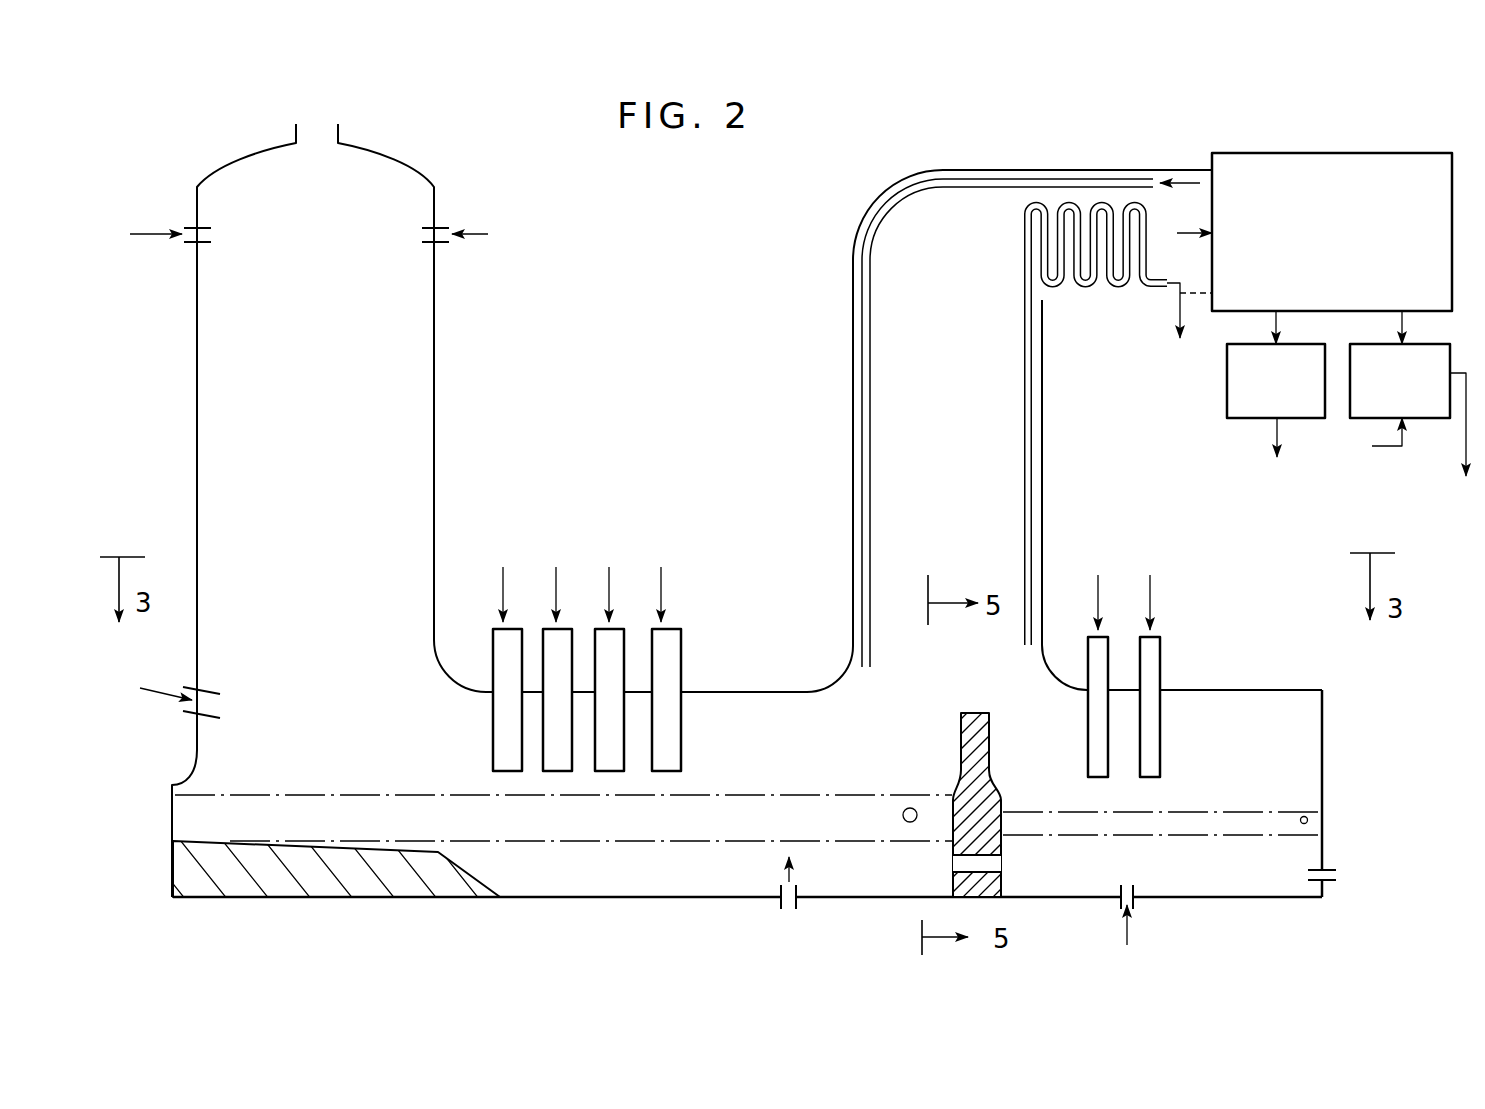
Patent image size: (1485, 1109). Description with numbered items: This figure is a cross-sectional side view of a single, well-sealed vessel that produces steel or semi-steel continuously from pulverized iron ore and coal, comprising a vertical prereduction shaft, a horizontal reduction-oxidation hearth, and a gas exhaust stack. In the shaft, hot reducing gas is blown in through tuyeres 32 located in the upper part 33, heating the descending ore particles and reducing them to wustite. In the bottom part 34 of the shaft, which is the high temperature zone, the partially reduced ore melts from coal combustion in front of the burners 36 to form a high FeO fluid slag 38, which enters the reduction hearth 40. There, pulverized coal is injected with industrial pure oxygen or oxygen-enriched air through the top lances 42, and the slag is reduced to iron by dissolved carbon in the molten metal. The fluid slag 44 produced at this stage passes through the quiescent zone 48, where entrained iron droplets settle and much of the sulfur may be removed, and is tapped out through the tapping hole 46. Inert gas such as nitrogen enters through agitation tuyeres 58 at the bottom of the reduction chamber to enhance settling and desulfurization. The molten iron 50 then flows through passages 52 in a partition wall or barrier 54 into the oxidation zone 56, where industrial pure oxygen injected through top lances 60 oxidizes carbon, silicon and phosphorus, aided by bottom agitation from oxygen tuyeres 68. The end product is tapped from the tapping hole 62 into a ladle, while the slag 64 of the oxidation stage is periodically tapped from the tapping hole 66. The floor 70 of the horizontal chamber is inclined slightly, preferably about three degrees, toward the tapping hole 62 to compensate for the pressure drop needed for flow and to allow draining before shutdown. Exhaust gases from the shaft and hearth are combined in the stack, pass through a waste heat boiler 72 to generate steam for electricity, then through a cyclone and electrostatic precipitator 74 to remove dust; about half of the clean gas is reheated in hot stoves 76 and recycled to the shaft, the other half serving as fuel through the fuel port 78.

The tuyeres 32 is at (450, 226).
The upper part of shaft 33 is at (335, 298).
The bottom part of the shaft (high temperature zone) 34 is at (347, 665).
The burners 36 is at (205, 695).
The high FeO fluid slag 38 is at (455, 815).
The reduction hearth 40 is at (580, 862).
The top lances 42 is at (557, 728).
The fluid slag 44 is at (690, 810).
The tapping hole 46 is at (914, 808).
The quiescent zone 48 is at (735, 858).
The molten iron 50 is at (912, 867).
The passages 52 is at (1002, 864).
The partition wall or barrier 54 is at (980, 738).
The oxidation zone 56 is at (1178, 808).
The agitation tuyeres 58 is at (792, 897).
The top lances 60 is at (1150, 663).
The tapping hole 62 is at (1328, 876).
The slag 64 is at (1268, 812).
The tapping hole 66 is at (1313, 819).
The oxygen tuyeres 68 is at (1130, 885).
The floor 70 is at (1080, 892).
The waste heat boiler 72 is at (1073, 205).
The cyclone and electrostatic precipitator 74 is at (1328, 153).
The hot stoves 76 is at (1227, 367).
The fuel port 78 is at (1268, 318).